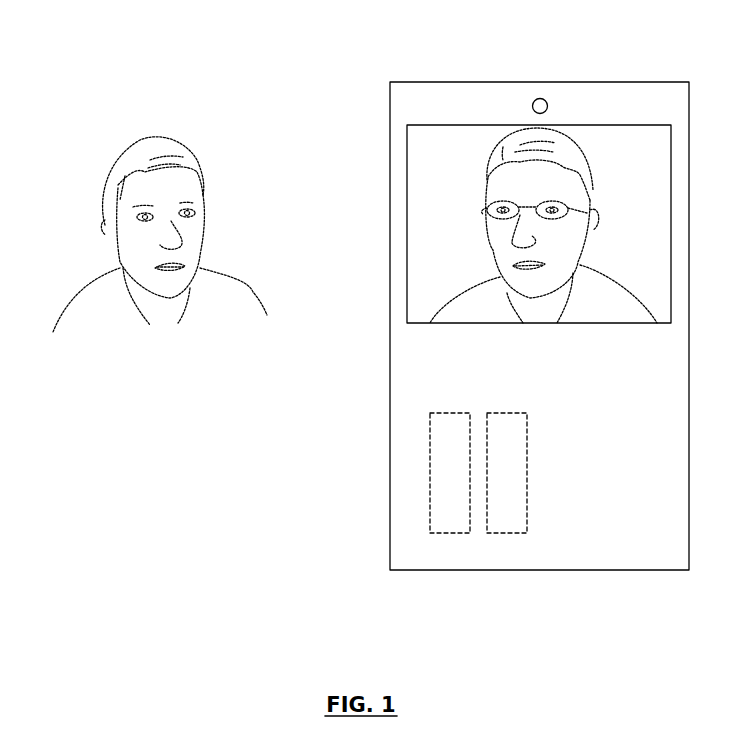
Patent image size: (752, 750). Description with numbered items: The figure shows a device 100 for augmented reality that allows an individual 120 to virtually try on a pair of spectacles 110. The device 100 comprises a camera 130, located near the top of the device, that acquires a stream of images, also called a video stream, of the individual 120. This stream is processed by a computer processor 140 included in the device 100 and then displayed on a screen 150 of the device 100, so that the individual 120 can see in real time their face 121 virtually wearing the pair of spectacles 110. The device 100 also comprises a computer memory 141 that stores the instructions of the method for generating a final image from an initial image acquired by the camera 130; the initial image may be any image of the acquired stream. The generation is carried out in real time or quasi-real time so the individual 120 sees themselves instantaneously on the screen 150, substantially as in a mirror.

The device for augmented reality 100 is at (423, 82).
The pair of spectacles 110 is at (567, 200).
The individual 120 is at (492, 185).
The face 121 is at (497, 243).
The camera 130 is at (532, 98).
The computer processor 140 is at (448, 503).
The computer memory 141 is at (500, 510).
The screen 150 is at (403, 325).